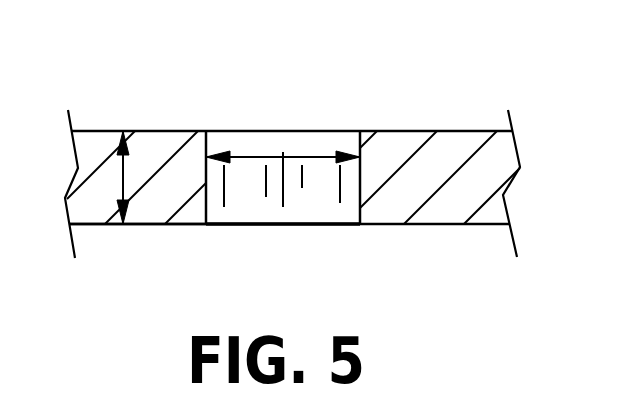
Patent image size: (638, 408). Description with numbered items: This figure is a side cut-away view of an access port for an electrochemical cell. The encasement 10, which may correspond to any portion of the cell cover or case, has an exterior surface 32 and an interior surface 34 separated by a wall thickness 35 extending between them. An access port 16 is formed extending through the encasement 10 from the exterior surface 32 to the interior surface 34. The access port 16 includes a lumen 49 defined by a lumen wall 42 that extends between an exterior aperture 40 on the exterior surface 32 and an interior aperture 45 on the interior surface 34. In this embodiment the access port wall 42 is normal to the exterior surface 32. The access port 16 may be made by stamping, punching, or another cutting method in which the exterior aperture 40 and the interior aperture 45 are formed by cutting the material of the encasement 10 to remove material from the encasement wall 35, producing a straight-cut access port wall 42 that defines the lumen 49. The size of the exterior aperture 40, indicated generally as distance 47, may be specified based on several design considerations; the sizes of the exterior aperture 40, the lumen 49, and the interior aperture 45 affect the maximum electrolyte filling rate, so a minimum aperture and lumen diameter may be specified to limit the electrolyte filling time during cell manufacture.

The encasement 10 is at (453, 155).
The access port 16 is at (322, 78).
The exterior surface 32 is at (145, 131).
The interior surface 34 is at (97, 227).
The wall thickness 35 is at (122, 180).
The exterior aperture 40 is at (323, 142).
The lumen wall 42 is at (205, 198).
The interior aperture 45 is at (282, 228).
The distance 47 is at (248, 157).
The lumen 49 is at (300, 198).